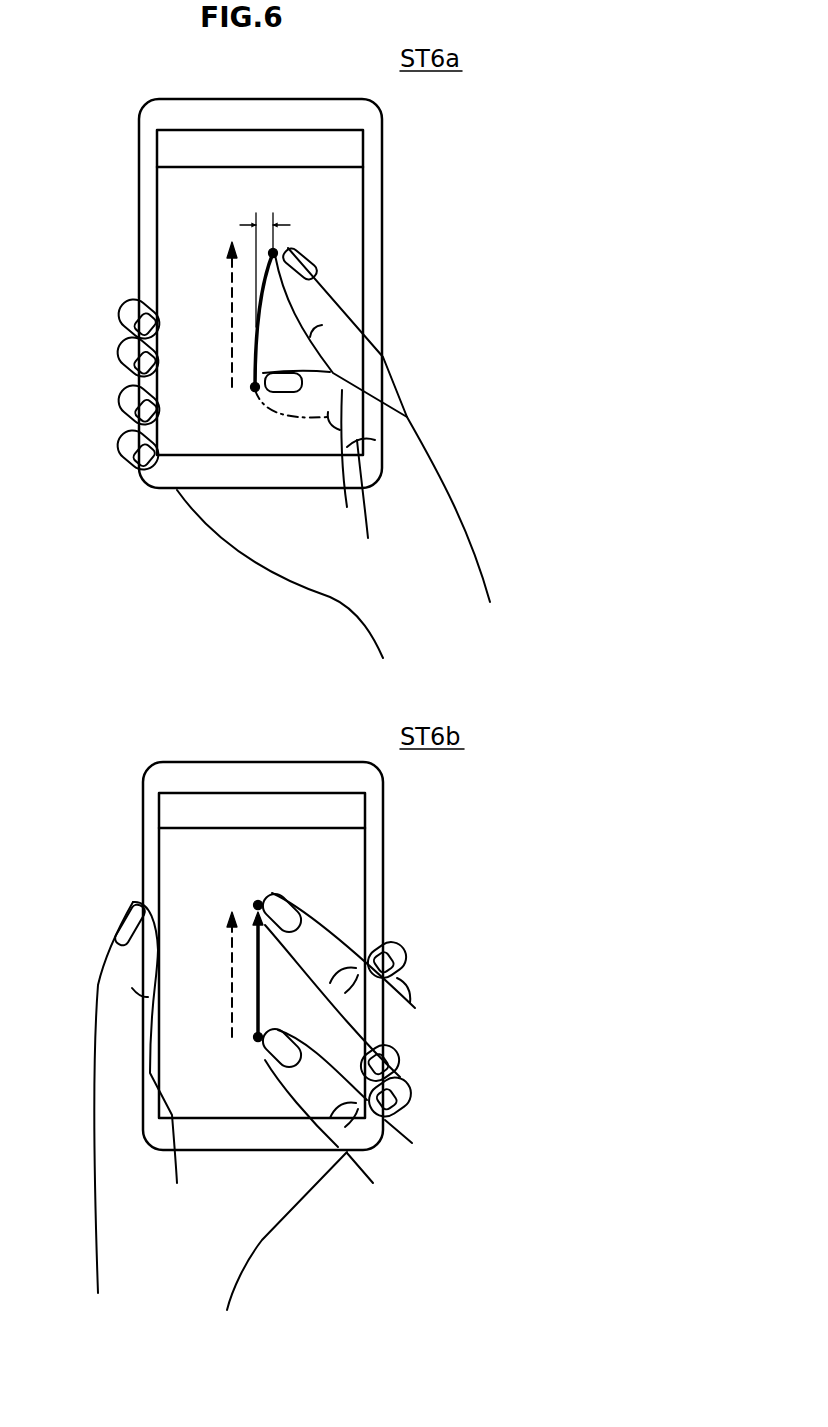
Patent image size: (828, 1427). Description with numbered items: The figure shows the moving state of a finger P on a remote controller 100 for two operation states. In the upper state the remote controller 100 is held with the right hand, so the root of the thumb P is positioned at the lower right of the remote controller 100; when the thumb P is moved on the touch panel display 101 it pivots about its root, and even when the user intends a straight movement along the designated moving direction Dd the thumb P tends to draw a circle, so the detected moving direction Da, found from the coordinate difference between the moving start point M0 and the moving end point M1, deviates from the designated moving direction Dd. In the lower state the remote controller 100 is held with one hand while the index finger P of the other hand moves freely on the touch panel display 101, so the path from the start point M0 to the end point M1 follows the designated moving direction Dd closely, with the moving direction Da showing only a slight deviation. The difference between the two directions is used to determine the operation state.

The remote controller 100 is at (383, 124).
The touch panel display 101 is at (364, 175).
The finger P is at (350, 327).
The moving start point M0 is at (253, 388).
The moving end point M1 is at (278, 252).
The designated moving direction Dd is at (232, 265).
The moving direction Da is at (258, 300).